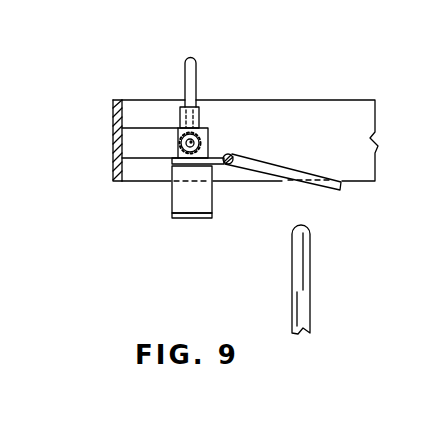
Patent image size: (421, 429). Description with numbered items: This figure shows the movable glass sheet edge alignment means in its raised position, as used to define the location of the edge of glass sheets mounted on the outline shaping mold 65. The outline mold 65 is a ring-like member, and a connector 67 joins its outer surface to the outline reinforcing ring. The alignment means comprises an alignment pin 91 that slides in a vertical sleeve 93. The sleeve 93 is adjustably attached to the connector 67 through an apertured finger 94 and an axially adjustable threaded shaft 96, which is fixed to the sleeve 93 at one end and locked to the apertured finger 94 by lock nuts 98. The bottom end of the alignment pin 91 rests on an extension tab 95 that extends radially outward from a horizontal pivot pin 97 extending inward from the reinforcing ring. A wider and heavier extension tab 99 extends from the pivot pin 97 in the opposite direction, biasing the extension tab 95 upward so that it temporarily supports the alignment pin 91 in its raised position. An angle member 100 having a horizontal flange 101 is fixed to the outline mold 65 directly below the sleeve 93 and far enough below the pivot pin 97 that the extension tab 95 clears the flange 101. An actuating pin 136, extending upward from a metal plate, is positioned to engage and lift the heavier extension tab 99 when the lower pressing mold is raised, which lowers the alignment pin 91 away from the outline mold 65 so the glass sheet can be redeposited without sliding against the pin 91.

The outline shaping mold 65 is at (292, 103).
The connector 67 is at (113, 115).
The alignment pin 91 is at (197, 63).
The vertical sleeve 93 is at (181, 112).
The apertured finger 94 is at (133, 128).
The extension tab 95 is at (173, 164).
The axially adjustable threaded shaft 96 is at (178, 145).
The horizontal pivot pin 97 is at (228, 155).
The lock nuts 98 is at (208, 140).
The heavier extension tab 99 is at (283, 170).
The angle member 100 is at (212, 197).
The horizontal flange 101 is at (180, 219).
The actuating pin 136 is at (292, 268).